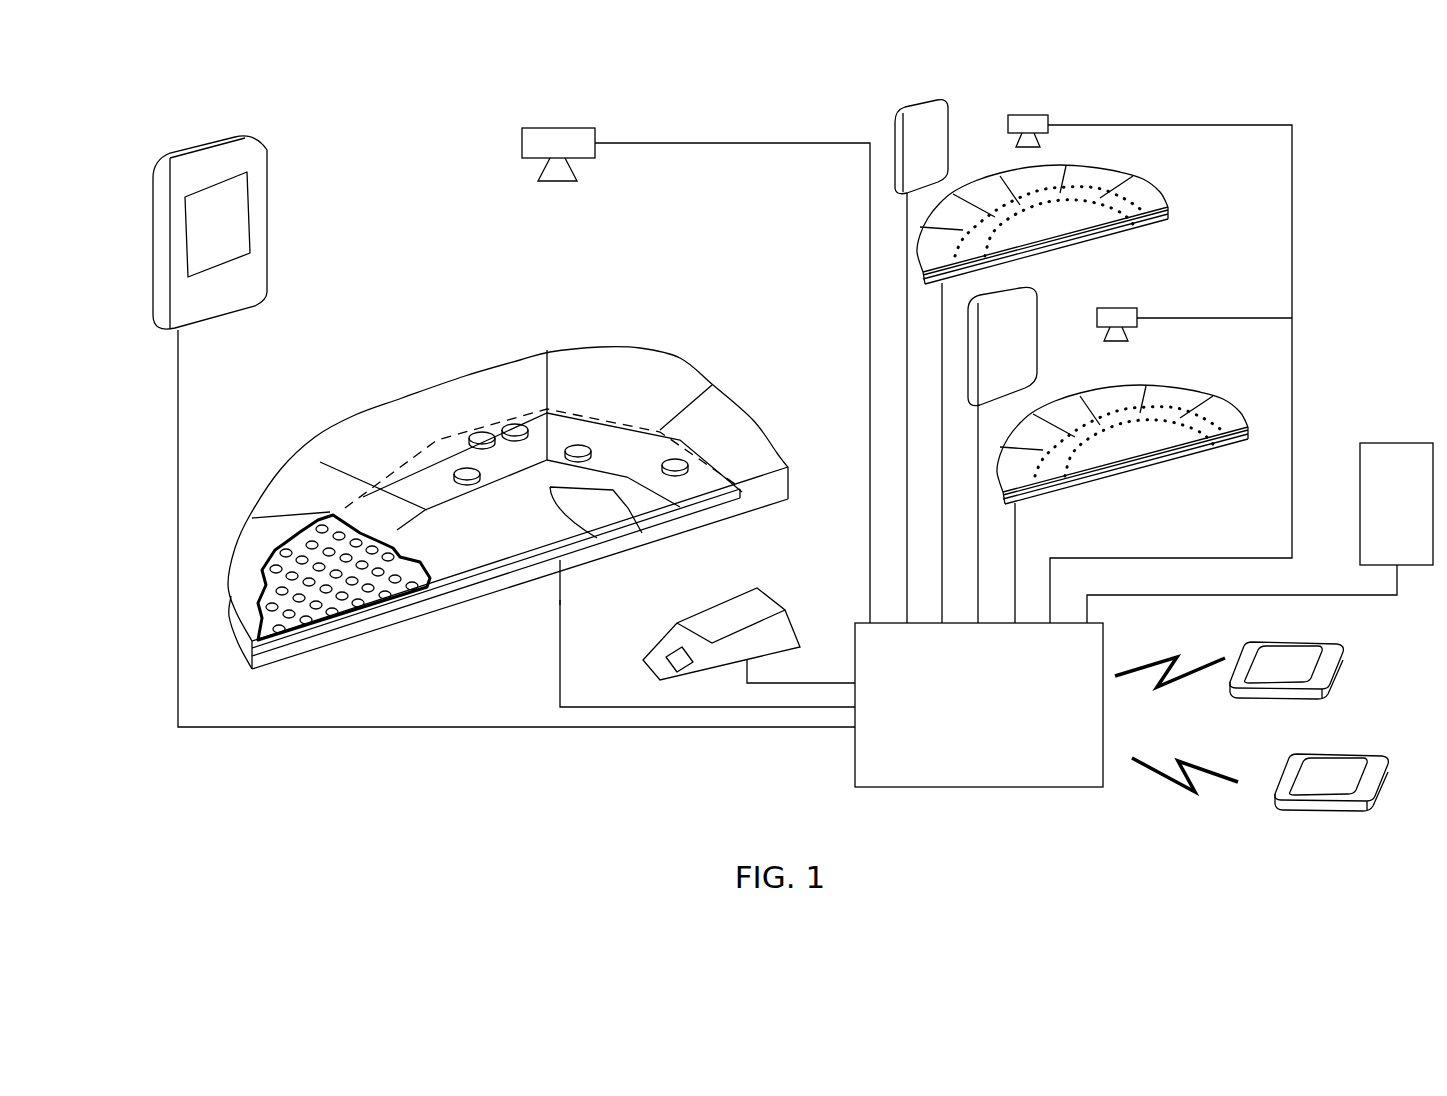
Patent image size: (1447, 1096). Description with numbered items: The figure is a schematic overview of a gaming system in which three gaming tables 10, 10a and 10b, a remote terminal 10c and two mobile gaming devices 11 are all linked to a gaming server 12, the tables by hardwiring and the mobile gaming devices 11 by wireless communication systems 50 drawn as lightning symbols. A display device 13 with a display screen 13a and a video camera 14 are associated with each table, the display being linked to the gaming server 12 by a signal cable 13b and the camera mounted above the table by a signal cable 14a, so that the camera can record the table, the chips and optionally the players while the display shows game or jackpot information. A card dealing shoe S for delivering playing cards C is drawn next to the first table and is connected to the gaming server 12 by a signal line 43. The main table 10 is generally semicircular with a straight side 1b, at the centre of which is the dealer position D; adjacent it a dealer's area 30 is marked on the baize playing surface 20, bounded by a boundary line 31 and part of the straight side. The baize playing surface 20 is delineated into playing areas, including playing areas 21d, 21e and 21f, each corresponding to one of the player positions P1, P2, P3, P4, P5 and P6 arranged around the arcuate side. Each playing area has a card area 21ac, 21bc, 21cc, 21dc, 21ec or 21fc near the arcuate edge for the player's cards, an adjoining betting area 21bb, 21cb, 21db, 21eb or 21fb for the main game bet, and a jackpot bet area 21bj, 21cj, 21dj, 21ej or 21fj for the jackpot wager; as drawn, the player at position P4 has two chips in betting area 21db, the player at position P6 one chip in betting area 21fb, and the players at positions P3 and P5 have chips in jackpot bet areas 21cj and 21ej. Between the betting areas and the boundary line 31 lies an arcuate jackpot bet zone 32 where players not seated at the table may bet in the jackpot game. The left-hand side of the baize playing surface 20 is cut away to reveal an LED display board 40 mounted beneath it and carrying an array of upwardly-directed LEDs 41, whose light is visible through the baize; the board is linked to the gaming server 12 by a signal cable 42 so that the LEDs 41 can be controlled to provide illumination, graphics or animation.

The straight side 1b is at (758, 494).
The gaming table 10 is at (514, 318).
The gaming table 10a is at (1165, 197).
The gaming table 10b is at (1180, 393).
The remote terminal 10c is at (1378, 517).
The mobile gaming device 11 is at (1305, 652).
The gaming server 12 is at (966, 717).
The display device 13 is at (595, 253).
The display screen 13a is at (192, 232).
The signal cable 13b is at (178, 360).
The video camera 14 is at (566, 128).
The signal cable 14a is at (745, 143).
The baize playing surface 20 is at (401, 417).
The card area 21ac is at (246, 568).
The player's betting area 21bb is at (300, 505).
The card area 21bc is at (293, 462).
The player's jackpot bet area 21bj is at (317, 433).
The player's betting area 21cb is at (420, 470).
The card area 21cc is at (347, 422).
The player's jackpot bet area 21cj is at (395, 445).
The playing area 21d is at (460, 490).
The player's betting area 21db is at (550, 365).
The card area 21dc is at (525, 375).
The player's jackpot bet area 21dj is at (504, 466).
The playing area 21e is at (640, 430).
The player's betting area 21eb is at (633, 427).
The card area 21ec is at (583, 397).
The player's jackpot bet area 21ej is at (600, 450).
The playing area 21f is at (750, 447).
The player's betting area 21fb is at (733, 497).
The card area 21fc is at (717, 407).
The player's jackpot bet area 21fj is at (693, 513).
The dealer's area 30 is at (490, 565).
The boundary line 31 is at (600, 522).
The jackpot bet zone 32 is at (633, 500).
The LED display board 40 is at (405, 597).
The LEDs 41 is at (413, 552).
The signal cable 42 is at (560, 645).
The signal line 43 is at (780, 683).
The wireless communication system 50 is at (1176, 728).
The player position P1 is at (210, 592).
The player position P2 is at (254, 470).
The player position P3 is at (348, 385).
The player position P4 is at (466, 405).
The player position P5 is at (646, 396).
The player position P6 is at (783, 396).
The playing cards C is at (655, 665).
The dealer position D is at (580, 606).
The card dealing shoe S is at (714, 649).